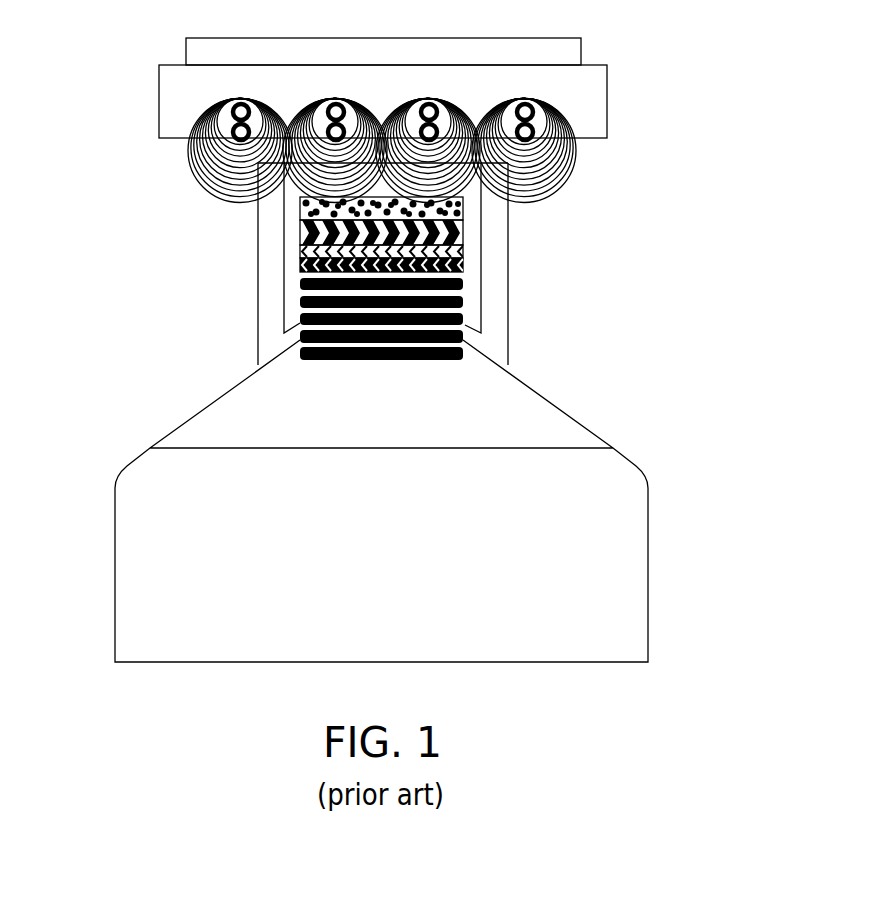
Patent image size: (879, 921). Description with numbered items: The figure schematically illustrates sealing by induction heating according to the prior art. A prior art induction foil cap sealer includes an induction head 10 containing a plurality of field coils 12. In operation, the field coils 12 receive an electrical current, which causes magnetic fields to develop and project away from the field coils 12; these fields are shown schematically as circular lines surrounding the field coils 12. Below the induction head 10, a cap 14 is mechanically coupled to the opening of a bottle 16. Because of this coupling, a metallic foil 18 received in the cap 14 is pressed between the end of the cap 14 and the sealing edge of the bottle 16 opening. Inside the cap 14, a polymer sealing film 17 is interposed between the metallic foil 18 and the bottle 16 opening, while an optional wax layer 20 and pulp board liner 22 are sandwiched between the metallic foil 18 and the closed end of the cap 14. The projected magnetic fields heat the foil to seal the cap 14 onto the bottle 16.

The induction head 10 is at (597, 82).
The field coils 12 is at (537, 116).
The cap 14 is at (302, 272).
The bottle 16 is at (207, 410).
The polymer sealing film 17 is at (453, 265).
The metallic foil 18 is at (300, 253).
The wax layer 20 is at (300, 233).
The pulp board liner 22 is at (453, 210).